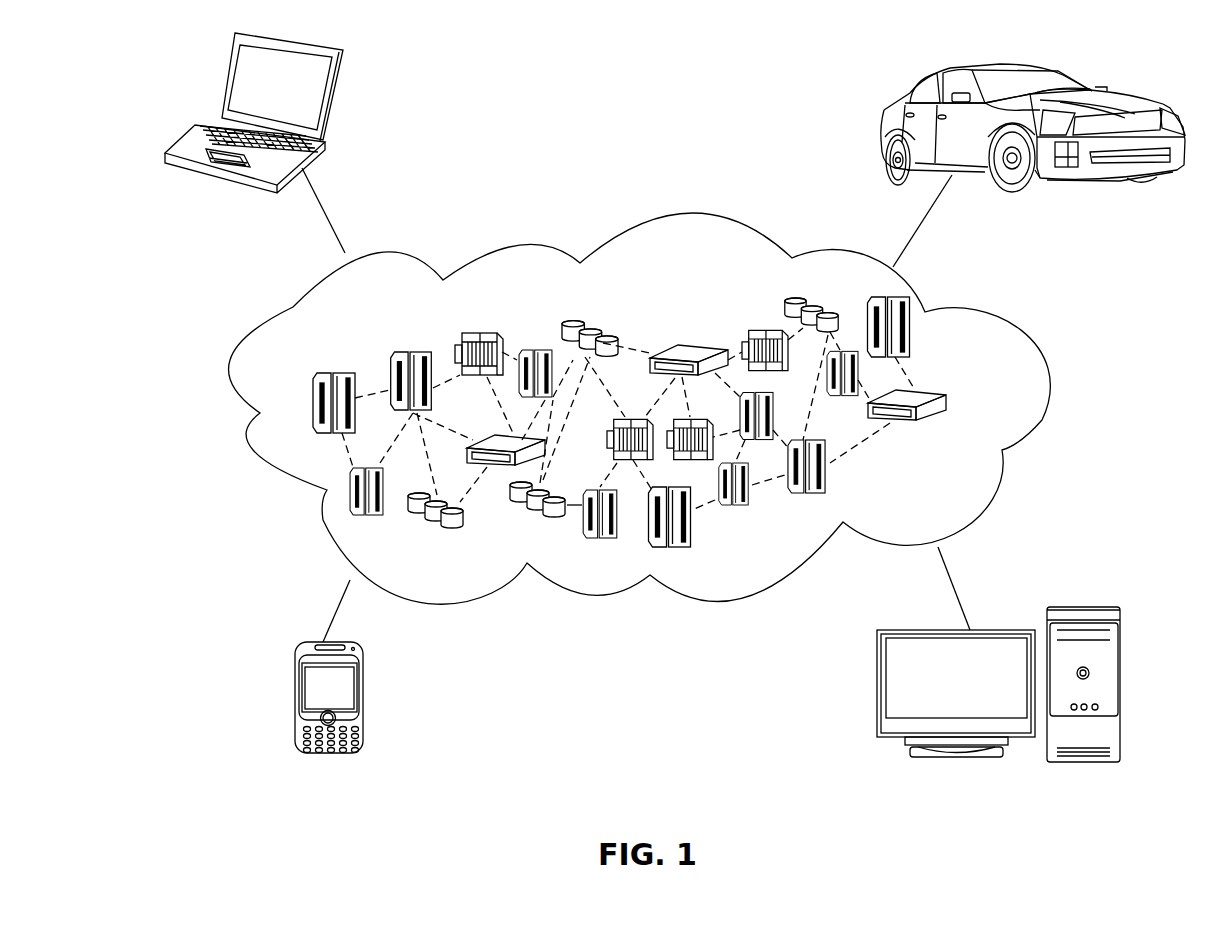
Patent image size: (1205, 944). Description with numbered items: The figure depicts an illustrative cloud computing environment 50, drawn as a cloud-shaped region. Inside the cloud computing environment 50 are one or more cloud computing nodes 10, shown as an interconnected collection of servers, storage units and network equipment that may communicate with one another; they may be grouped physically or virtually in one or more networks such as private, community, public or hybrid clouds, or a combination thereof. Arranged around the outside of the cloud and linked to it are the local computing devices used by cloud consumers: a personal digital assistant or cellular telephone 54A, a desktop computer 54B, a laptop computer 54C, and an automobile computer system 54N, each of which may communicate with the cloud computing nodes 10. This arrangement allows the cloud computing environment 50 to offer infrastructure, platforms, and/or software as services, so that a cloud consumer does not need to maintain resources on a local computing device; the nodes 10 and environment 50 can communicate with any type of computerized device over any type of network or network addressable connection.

The cloud computing nodes 10 is at (987, 405).
The cloud computing environment 50 is at (1010, 322).
The personal digital assistant (PDA) or cellular telephone 54A is at (298, 702).
The desktop computer 54B is at (1087, 605).
The laptop computer 54C is at (337, 102).
The automobile computer system 54N is at (884, 108).